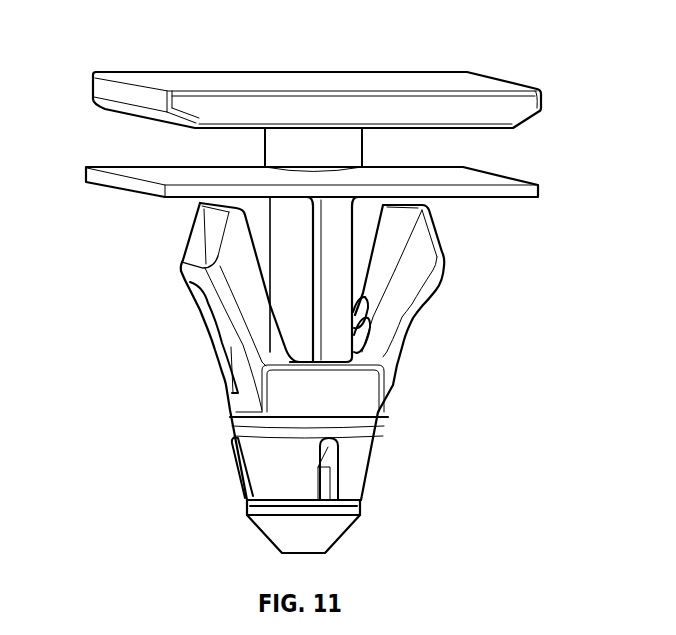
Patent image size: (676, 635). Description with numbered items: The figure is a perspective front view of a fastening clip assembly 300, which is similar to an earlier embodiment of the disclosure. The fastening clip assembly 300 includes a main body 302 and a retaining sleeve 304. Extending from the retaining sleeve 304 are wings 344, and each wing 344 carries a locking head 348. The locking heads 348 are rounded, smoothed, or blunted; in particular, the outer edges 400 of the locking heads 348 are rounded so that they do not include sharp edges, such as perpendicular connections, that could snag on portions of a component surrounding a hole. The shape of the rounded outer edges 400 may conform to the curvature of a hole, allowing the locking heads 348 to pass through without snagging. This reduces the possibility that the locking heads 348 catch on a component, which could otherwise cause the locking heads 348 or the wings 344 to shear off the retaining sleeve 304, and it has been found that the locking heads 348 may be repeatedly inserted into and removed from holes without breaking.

The fastening clip assembly 300 is at (119, 55).
The main body 302 is at (491, 87).
The retaining sleeve 304 is at (382, 412).
The wing 344 is at (213, 325).
The locking head 348 is at (190, 232).
The outer edge 400 is at (183, 266).